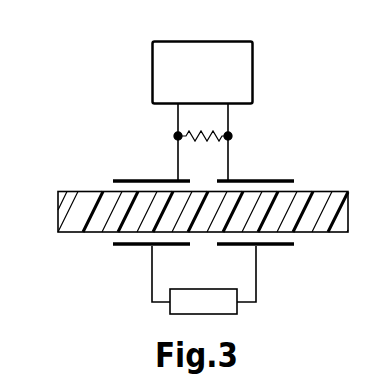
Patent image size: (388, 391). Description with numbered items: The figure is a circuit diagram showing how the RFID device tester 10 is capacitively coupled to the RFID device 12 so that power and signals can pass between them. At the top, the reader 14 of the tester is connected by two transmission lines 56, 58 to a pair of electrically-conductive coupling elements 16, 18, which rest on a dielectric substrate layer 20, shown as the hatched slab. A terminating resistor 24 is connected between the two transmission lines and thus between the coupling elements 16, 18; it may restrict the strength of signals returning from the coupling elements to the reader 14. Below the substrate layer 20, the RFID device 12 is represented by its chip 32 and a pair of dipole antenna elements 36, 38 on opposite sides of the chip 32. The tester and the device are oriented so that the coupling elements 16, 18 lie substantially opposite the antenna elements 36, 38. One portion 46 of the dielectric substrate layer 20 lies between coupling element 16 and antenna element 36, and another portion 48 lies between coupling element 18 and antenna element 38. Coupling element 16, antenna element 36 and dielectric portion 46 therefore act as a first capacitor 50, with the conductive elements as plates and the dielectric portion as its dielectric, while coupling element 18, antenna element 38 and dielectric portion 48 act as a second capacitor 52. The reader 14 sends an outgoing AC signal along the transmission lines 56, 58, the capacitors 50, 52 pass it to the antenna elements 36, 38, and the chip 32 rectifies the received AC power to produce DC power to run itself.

The RFID device tester 10 is at (90, 89).
The RFID device 12 is at (83, 312).
The reader 14 is at (253, 56).
The coupling element 16 is at (133, 179).
The coupling element 18 is at (279, 178).
The dielectric substrate layer 20 is at (338, 210).
The terminating resistor 24 is at (203, 135).
The chip 32 is at (200, 306).
The antenna element 36 is at (134, 246).
The antenna element 38 is at (279, 246).
The portion of the dielectric substrate layer 46 is at (82, 211).
The portion of the dielectric substrate layer 48 is at (284, 209).
The first capacitor 50 is at (80, 250).
The second capacitor 52 is at (334, 250).
The transmission line 56 is at (177, 117).
The transmission line 58 is at (228, 163).